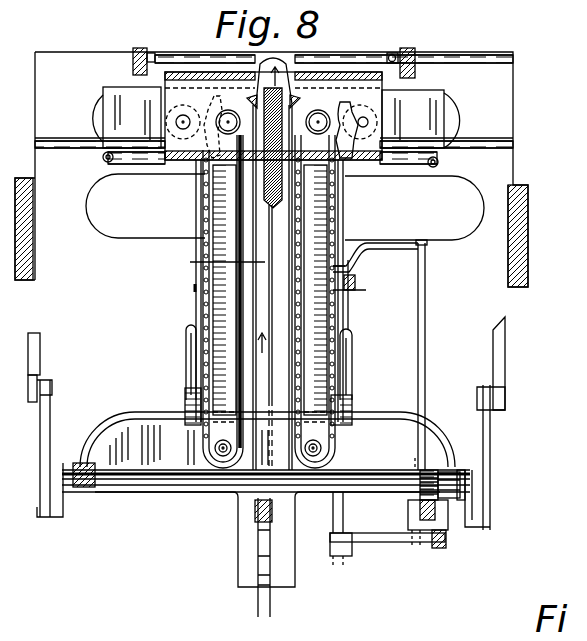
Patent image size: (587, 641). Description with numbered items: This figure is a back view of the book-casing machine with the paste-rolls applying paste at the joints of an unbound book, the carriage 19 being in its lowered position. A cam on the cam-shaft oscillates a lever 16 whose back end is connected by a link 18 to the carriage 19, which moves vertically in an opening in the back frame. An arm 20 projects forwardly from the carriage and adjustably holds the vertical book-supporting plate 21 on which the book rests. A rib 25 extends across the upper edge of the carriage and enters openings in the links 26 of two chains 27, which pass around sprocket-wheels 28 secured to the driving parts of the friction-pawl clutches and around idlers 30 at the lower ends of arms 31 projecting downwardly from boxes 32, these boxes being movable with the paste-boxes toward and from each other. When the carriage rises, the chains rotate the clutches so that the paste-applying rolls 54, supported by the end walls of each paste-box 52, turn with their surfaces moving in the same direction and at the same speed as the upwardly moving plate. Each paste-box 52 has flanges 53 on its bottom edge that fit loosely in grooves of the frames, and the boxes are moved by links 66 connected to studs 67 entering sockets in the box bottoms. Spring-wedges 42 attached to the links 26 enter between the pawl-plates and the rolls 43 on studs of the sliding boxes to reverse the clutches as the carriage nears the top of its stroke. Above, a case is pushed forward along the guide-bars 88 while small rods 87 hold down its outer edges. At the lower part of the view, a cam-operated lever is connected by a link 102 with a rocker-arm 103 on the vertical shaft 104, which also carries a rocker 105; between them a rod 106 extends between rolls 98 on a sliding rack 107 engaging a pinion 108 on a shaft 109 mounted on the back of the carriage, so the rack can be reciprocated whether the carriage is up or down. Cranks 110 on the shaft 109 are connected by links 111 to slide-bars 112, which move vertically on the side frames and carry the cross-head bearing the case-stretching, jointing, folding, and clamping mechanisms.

The lever 16 is at (258, 605).
The link 18 is at (240, 548).
The carriage 19 is at (172, 448).
The arm 20 is at (333, 510).
The book-supporting plate 21 is at (213, 267).
The rib 25 is at (376, 425).
The links 26 is at (185, 410).
The chains 27 is at (195, 290).
The sprocket-wheels 28 is at (214, 95).
The idlers 30 is at (203, 456).
The arms 31 is at (269, 291).
The boxes 32 is at (165, 95).
The spring-wedges 42 is at (186, 362).
The rolls 43 is at (183, 131).
The paste-box 52 is at (229, 109).
The flanges 53 is at (100, 140).
The paste-applying roll 54 is at (272, 58).
The links 66 is at (133, 176).
The studs 67 is at (104, 160).
The rods 87 is at (151, 53).
The guide-bars 88 is at (136, 50).
The rolls 98 is at (408, 505).
The link 102 is at (446, 546).
The rocker-arm 103 is at (346, 556).
The vertical shaft 104 is at (338, 568).
The rocker 105 is at (371, 246).
The rod 106 is at (426, 290).
The sliding rack 107 is at (420, 550).
The pinion 108 is at (455, 440).
The shaft 109 is at (178, 494).
The cranks 110 is at (56, 512).
The links 111 is at (50, 421).
The slide-bars 112 is at (42, 350).